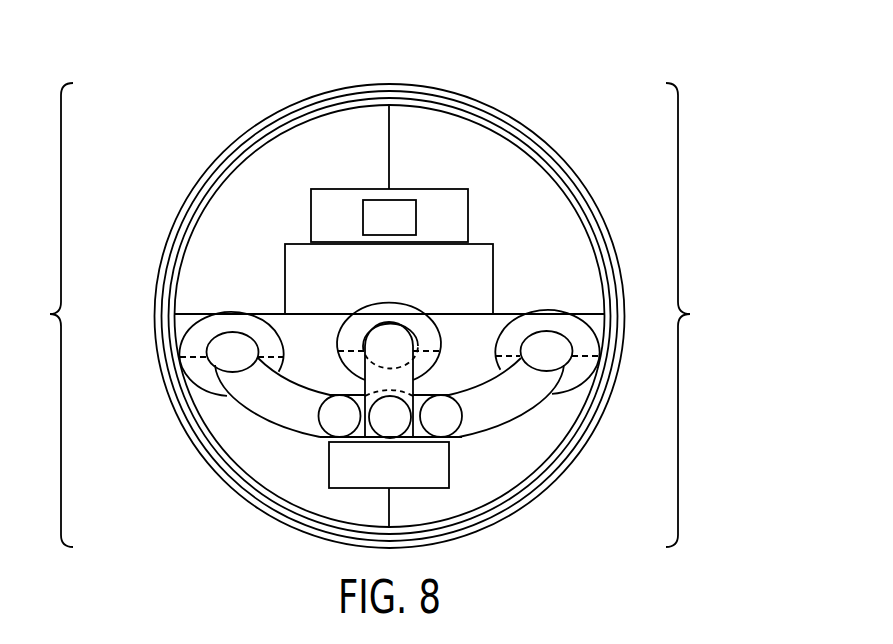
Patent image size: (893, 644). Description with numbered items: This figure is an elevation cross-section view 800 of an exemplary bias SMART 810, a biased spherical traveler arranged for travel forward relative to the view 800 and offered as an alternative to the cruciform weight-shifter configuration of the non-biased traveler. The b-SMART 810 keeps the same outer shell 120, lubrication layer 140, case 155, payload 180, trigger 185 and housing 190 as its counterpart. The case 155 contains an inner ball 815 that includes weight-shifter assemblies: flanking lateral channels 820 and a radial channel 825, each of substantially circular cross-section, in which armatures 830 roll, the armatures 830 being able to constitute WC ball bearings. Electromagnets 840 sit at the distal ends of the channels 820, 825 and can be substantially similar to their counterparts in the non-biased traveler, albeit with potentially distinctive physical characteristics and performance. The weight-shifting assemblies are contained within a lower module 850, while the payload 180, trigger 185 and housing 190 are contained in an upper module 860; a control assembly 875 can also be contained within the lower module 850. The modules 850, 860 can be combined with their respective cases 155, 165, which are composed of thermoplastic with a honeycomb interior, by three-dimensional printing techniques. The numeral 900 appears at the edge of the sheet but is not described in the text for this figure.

The apparatus 800 is at (707, 147).
The first section 810 is at (41, 315).
The second section 815 is at (697, 315).
The housing 120 is at (502, 110).
The inner liner 165 is at (587, 210).
The outer layer 140 is at (190, 435).
The inner layer 155 is at (578, 432).
The toroidal coil 840 is at (360, 308).
The central conduit 825 is at (363, 382).
The connecting tube 830 is at (452, 395).
The base assembly 820 is at (490, 430).
The controller 860 is at (429, 180).
The processor 190 is at (352, 231).
The memory 185 is at (403, 231).
The control unit 180 is at (402, 290).
The chamber 850 is at (303, 480).
The power source 875 is at (403, 480).
The system 900 is at (783, 635).